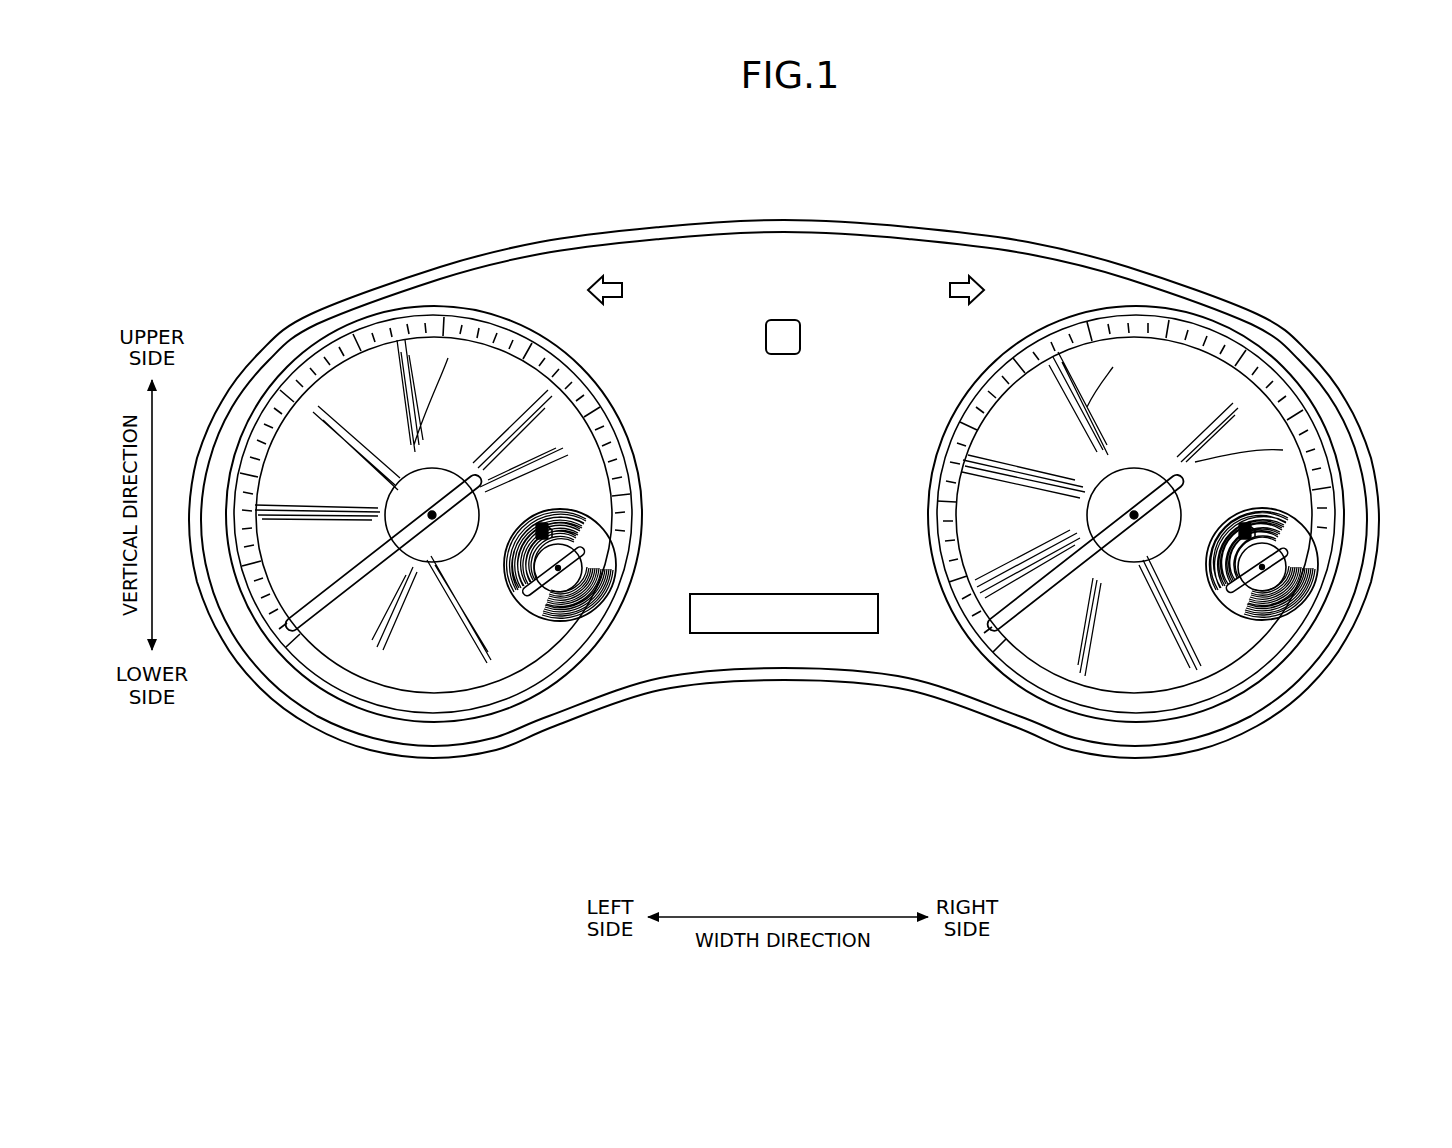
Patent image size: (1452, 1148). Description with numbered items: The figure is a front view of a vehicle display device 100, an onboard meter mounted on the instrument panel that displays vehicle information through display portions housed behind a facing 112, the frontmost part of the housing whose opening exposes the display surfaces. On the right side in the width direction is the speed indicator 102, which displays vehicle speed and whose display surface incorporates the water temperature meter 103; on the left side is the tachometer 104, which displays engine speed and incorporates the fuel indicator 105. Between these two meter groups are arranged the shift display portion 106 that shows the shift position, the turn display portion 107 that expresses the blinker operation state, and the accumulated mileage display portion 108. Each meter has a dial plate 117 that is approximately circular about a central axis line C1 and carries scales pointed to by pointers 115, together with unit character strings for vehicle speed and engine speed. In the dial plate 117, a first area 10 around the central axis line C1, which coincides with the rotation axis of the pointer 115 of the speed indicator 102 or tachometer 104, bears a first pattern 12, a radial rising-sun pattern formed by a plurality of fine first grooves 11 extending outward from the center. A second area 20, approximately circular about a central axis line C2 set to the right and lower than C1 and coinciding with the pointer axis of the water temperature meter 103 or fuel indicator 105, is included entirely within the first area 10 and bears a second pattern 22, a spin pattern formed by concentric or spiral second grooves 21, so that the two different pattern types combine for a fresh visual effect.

The vehicle display device 100 is at (342, 148).
The first area 10 is at (394, 328).
The dial plate 117 is at (441, 310).
The first groove 11 is at (325, 500).
The first pattern 12 is at (284, 453).
The central axis line C1 is at (432, 518).
The turn display portion 107 is at (614, 264).
The facing 112 is at (1256, 305).
The second groove 21 is at (535, 592).
The second area 20 is at (548, 628).
The second pattern 22 is at (530, 592).
The central axis line C2 is at (566, 580).
The pointer 115 is at (290, 628).
The water temperature meter 103 is at (1322, 540).
The fuel indicator 105 is at (618, 610).
The accumulated mileage display portion 108 is at (786, 640).
The shift display portion 106 is at (820, 342).
The tachometer 104 is at (365, 725).
The speed indicator 102 is at (1195, 724).